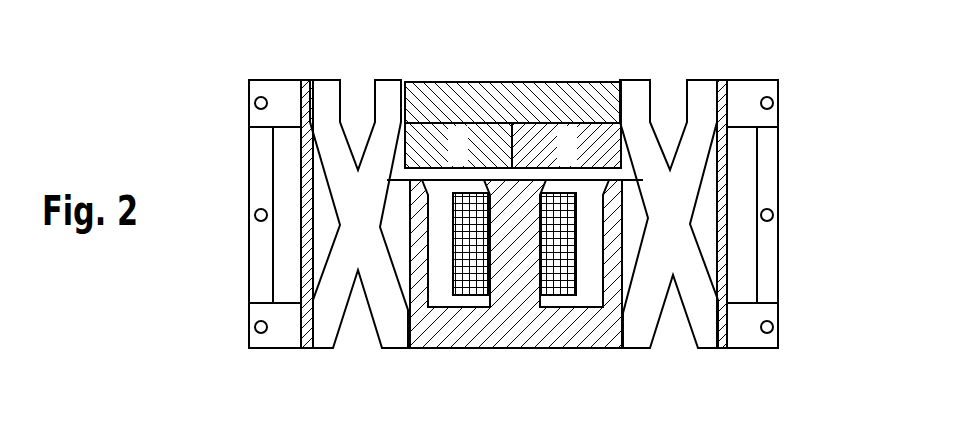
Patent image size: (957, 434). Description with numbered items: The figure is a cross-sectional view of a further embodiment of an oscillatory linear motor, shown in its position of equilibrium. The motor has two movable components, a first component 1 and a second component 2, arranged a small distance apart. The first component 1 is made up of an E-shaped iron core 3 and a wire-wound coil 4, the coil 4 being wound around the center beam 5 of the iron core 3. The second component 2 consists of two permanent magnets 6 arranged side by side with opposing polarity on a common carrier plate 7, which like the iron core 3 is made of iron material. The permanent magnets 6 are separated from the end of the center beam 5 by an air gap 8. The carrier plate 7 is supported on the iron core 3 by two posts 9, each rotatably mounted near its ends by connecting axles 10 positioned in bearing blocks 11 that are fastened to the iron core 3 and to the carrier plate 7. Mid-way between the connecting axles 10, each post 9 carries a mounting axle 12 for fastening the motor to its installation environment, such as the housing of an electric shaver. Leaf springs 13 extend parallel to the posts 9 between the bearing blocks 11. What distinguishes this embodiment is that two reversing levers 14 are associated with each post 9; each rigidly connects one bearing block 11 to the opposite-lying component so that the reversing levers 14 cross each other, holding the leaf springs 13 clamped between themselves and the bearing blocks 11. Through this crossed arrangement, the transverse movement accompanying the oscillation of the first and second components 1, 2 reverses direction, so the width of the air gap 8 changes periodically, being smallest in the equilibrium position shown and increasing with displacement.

The first component 1 is at (626, 299).
The second component 2 is at (612, 101).
The iron core 3 is at (490, 333).
The coil 4 is at (558, 270).
The center beam 5 is at (518, 242).
The permanent magnet 6 is at (492, 140).
The carrier plate 7 is at (605, 100).
The air gap 8 is at (530, 177).
The post 9 is at (768, 187).
The connecting axle 10 is at (766, 96).
The bearing block 11 is at (740, 93).
The mounting axle 12 is at (774, 215).
The leaf spring 13 is at (728, 270).
The reversing lever 14 is at (640, 328).